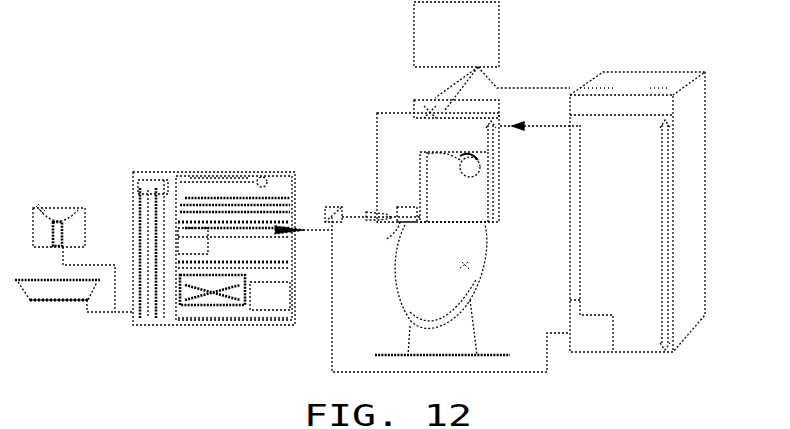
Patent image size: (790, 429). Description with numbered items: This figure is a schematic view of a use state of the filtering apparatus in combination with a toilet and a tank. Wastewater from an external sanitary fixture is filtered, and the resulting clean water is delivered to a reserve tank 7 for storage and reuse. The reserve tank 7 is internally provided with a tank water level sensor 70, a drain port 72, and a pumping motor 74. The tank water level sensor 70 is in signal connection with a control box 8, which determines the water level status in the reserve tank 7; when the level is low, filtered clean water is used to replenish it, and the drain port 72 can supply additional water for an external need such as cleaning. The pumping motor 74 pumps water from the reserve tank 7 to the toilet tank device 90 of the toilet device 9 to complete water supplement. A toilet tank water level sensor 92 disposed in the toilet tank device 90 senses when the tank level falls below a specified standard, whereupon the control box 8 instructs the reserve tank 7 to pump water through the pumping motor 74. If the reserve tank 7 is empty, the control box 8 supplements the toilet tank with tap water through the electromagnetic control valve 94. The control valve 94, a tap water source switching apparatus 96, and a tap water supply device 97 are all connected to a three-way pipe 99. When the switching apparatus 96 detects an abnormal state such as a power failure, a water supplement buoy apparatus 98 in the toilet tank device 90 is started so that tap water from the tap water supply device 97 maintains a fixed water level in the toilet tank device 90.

The reserve tank 7 is at (650, 72).
The control box 8 is at (414, 18).
The toilet device 9 is at (483, 272).
The tank water level sensor 70 is at (665, 350).
The drain port 72 is at (706, 317).
The pumping motor 74 is at (598, 345).
The toilet tank device 90 is at (500, 177).
The toilet tank water level sensor 92 is at (497, 208).
The control valve for tap water supplement of the toilet tank 94 is at (430, 108).
The tap water source switching apparatus 96 is at (395, 232).
The tap water supply device 97 is at (331, 206).
The water supplement buoy apparatus 98 is at (493, 148).
The three-way pipe 99 is at (382, 212).